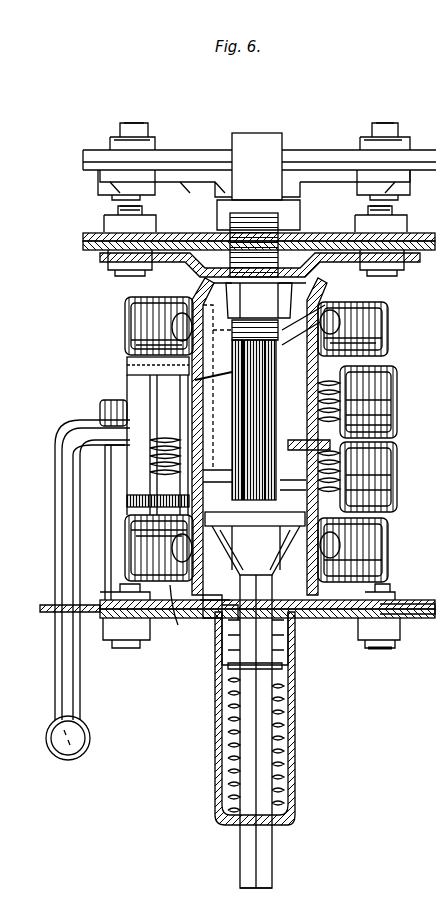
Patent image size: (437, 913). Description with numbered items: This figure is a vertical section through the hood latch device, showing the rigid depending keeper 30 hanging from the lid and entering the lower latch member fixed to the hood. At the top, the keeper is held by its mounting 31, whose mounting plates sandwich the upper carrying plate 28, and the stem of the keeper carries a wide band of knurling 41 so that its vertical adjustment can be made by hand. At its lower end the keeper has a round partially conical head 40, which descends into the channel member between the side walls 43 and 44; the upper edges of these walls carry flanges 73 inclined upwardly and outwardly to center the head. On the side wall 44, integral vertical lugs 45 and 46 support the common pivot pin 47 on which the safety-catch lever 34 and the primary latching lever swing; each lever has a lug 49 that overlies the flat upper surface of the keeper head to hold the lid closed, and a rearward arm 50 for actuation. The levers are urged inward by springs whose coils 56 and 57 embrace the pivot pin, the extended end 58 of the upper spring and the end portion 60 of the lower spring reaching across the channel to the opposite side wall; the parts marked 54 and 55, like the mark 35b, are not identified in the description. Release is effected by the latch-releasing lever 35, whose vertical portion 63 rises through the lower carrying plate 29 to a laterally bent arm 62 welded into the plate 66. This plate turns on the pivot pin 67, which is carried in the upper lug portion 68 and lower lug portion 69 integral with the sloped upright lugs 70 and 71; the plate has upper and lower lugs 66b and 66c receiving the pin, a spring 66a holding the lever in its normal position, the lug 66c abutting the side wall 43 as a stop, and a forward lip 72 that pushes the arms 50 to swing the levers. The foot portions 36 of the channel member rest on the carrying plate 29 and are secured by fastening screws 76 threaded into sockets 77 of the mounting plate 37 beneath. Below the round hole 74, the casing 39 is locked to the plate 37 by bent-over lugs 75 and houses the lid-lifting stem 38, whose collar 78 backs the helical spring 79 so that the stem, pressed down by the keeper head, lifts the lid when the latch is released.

The carrying plate 28 is at (83, 237).
The carrying plate 29 is at (48, 605).
The keeper 30 is at (318, 312).
The mounting 31 is at (112, 255).
The safety-catch lever 34 is at (385, 390).
The latch-releasing lever 35 is at (78, 738).
The solenoid coil 35b is at (392, 472).
The foot portions 36 is at (357, 610).
The mounting plate 37 is at (400, 610).
The lid-lifting stem 38 is at (256, 702).
The casing 39 is at (292, 758).
The head 40 is at (270, 556).
The knurling 41 is at (258, 320).
The side wall 43 is at (188, 535).
The side wall 44 is at (340, 548).
The lug 45 is at (375, 316).
The lug 46 is at (372, 562).
The pivot pin 47 is at (380, 340).
The lug 49 is at (298, 432).
The arm 50 is at (282, 370).
The coil 54 is at (340, 484).
The coil 55 is at (340, 408).
The coil of the upper spring 56 is at (350, 385).
The coil of the lower spring 57 is at (355, 462).
The extended end of the upper spring 58 is at (212, 388).
The end portion of the lower spring 60 is at (205, 486).
The laterally bent arm 62 is at (109, 522).
The vertical portion 63 is at (62, 521).
The plate 66 is at (128, 395).
The spring 66a is at (158, 468).
The upper lug 66b is at (130, 366).
The lower lug 66c is at (135, 500).
The pivot pin 67 is at (160, 415).
The upper lug portion 68 is at (130, 332).
The lower lug portion 69 is at (122, 530).
The upright lug 70 is at (135, 305).
The upright lug 71 is at (177, 614).
The lip 72 is at (217, 438).
The flanges 73 is at (200, 286).
The round hole 74 is at (210, 610).
The lugs 75 is at (232, 612).
The fastening screws 76 is at (388, 650).
The threaded sockets 77 is at (370, 644).
The collar 78 is at (228, 669).
The helical spring 79 is at (228, 724).